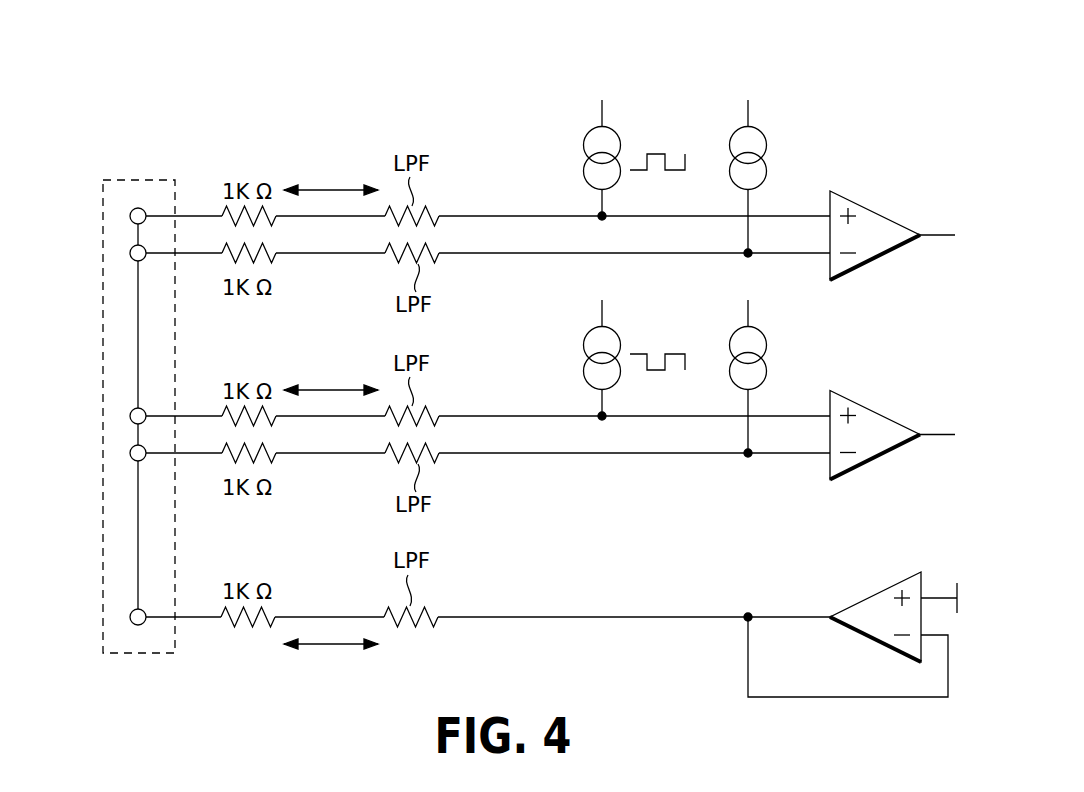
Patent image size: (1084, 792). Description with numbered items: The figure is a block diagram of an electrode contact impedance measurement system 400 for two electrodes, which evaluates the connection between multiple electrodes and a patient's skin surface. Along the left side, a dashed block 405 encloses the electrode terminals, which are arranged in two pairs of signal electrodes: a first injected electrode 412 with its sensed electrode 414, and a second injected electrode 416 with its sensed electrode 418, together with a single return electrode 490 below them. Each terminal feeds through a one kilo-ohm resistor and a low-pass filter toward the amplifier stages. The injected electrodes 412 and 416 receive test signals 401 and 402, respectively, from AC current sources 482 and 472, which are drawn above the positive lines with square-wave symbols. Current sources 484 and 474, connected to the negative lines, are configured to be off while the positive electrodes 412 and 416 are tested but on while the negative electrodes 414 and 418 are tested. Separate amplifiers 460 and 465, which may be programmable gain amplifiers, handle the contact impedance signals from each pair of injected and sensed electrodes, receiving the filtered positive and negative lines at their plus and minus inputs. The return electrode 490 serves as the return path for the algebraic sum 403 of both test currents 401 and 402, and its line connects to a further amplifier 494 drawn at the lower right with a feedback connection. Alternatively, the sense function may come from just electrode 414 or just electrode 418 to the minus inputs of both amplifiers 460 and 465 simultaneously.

The electrode contact impedance measurement system 400 is at (342, 88).
The test signal 401 is at (330, 188).
The test signal 402 is at (330, 388).
The algebraic sum of test currents 403 is at (328, 646).
The connector 405 is at (138, 180).
The first injected electrode 412 is at (130, 216).
The sensed electrode 414 is at (130, 253).
The second injected electrode 416 is at (130, 416).
The sensed electrode 418 is at (130, 453).
The return electrode 490 is at (130, 617).
The amplifier 460 is at (874, 208).
The amplifier 465 is at (874, 408).
The buffer amplifier 494 is at (880, 590).
The AC current source 482 is at (622, 145).
The current source 484 is at (768, 145).
The AC current source 472 is at (622, 345).
The current source 474 is at (768, 345).